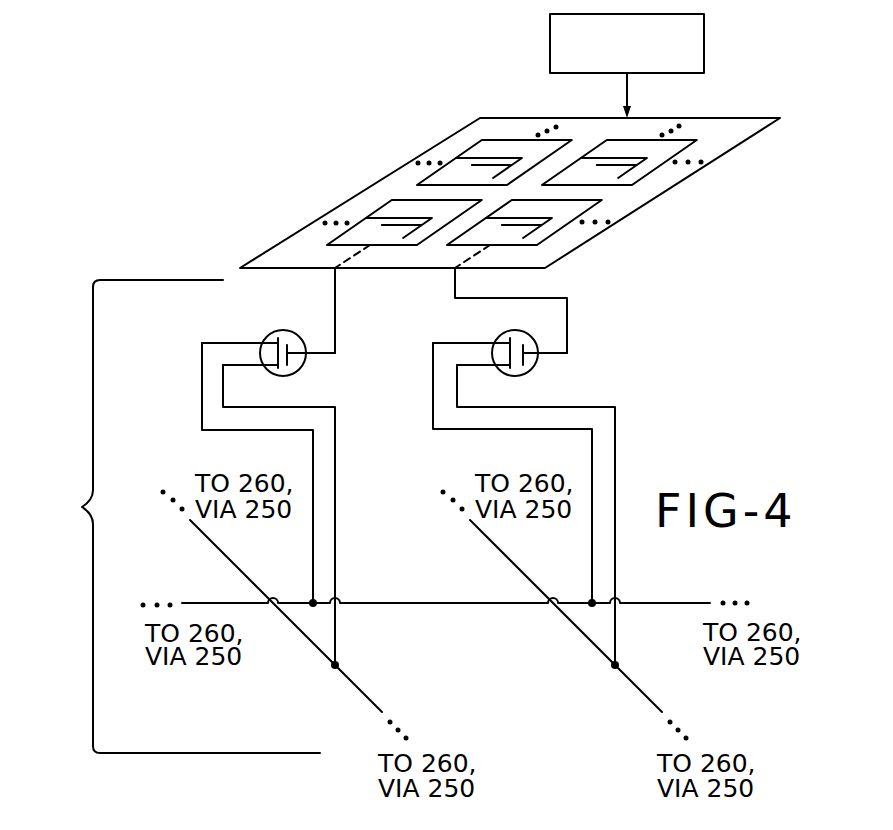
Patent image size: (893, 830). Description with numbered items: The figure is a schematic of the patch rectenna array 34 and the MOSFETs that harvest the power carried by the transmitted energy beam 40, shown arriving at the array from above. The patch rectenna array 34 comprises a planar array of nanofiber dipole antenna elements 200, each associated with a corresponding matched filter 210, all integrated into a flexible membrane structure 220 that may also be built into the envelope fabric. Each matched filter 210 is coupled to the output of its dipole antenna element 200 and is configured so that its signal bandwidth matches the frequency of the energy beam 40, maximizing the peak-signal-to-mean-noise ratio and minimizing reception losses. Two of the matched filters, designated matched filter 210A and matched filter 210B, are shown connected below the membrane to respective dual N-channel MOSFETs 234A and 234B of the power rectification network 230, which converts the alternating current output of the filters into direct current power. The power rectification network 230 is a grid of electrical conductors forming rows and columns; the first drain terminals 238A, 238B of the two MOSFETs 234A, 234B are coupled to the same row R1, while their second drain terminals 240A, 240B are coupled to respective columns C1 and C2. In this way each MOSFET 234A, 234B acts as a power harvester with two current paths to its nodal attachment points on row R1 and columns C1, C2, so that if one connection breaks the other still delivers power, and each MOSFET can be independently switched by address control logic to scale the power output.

The patch rectenna array 34 is at (511, 110).
The energy beam 40 is at (704, 50).
The membrane structure 220 is at (703, 118).
The dipole antenna element 200 is at (485, 153).
The matched filter 210 is at (463, 158).
The matched filter 210A is at (370, 220).
The matched filter 210B is at (548, 232).
The power rectification network 230 is at (177, 516).
The dual N-channel MOSFET 234A is at (252, 327).
The dual N-channel MOSFET 234B is at (479, 329).
The first drain terminal 238A is at (198, 408).
The first drain terminal 238B is at (432, 407).
The second drain terminal 240A is at (335, 482).
The second drain terminal 240B is at (615, 440).
The row R1 is at (428, 604).
The column C1 is at (273, 600).
The column C2 is at (553, 600).